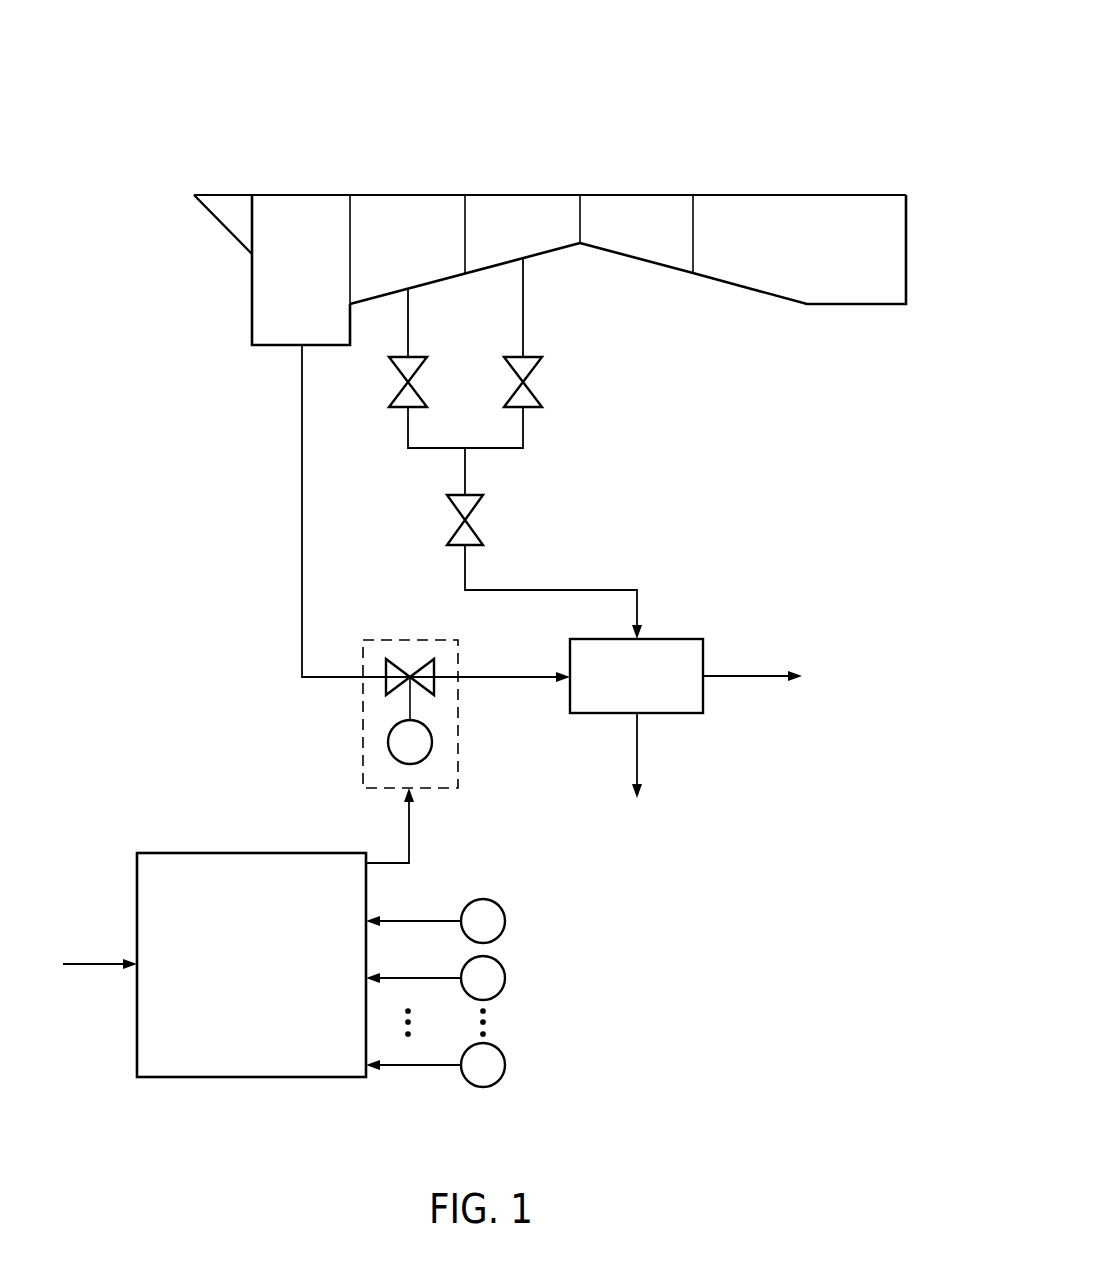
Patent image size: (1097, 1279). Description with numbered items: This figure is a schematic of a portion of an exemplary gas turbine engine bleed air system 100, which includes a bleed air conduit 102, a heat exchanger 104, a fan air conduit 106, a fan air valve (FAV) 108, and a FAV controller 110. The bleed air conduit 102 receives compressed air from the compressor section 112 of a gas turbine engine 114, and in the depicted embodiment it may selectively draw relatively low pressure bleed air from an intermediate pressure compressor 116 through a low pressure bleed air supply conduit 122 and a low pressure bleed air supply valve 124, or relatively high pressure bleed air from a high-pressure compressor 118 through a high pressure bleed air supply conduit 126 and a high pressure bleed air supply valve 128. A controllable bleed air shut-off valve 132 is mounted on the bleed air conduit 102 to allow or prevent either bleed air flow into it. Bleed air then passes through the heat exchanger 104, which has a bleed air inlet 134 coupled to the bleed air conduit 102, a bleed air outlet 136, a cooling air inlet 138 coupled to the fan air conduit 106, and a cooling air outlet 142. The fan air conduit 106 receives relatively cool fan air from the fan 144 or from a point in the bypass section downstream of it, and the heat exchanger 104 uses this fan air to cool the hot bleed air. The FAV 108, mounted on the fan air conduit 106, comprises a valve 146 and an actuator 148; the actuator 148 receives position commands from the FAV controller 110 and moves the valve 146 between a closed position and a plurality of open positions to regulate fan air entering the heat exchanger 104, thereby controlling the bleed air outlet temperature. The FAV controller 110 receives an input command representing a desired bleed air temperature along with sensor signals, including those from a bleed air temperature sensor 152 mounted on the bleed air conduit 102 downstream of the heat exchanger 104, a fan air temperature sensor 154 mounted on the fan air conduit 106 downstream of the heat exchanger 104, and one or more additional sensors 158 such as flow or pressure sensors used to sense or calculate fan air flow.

The gas turbine engine bleed air system 100 is at (508, 181).
The bleed air conduit 102 is at (543, 590).
The heat exchanger 104 is at (692, 639).
The fan air conduit 106 is at (302, 513).
The fan air valve (FAV) 108 is at (387, 640).
The FAV controller 110 is at (239, 853).
The compressor section 112 is at (350, 157).
The gas turbine engine 114 is at (181, 169).
The intermediate pressure compressor 116 is at (408, 195).
The high-pressure compressor 118 is at (522, 195).
The low pressure bleed air supply conduit 122 is at (408, 336).
The low pressure bleed air supply valve 124 is at (397, 372).
The high pressure bleed air supply conduit 126 is at (523, 336).
The high pressure bleed air supply valve 128 is at (534, 374).
The bleed air shut-off valve 132 is at (470, 519).
The bleed air inlet 134 is at (632, 636).
The bleed air outlet 136 is at (641, 717).
The cooling air inlet 138 is at (568, 672).
The cooling air outlet 142 is at (708, 679).
The fan 144 is at (252, 303).
The valve 146 is at (427, 660).
The actuator 148 is at (432, 744).
The bleed air temperature sensor 152 is at (505, 918).
The fan air temperature sensor 154 is at (505, 975).
The additional sensors 158 is at (505, 1062).